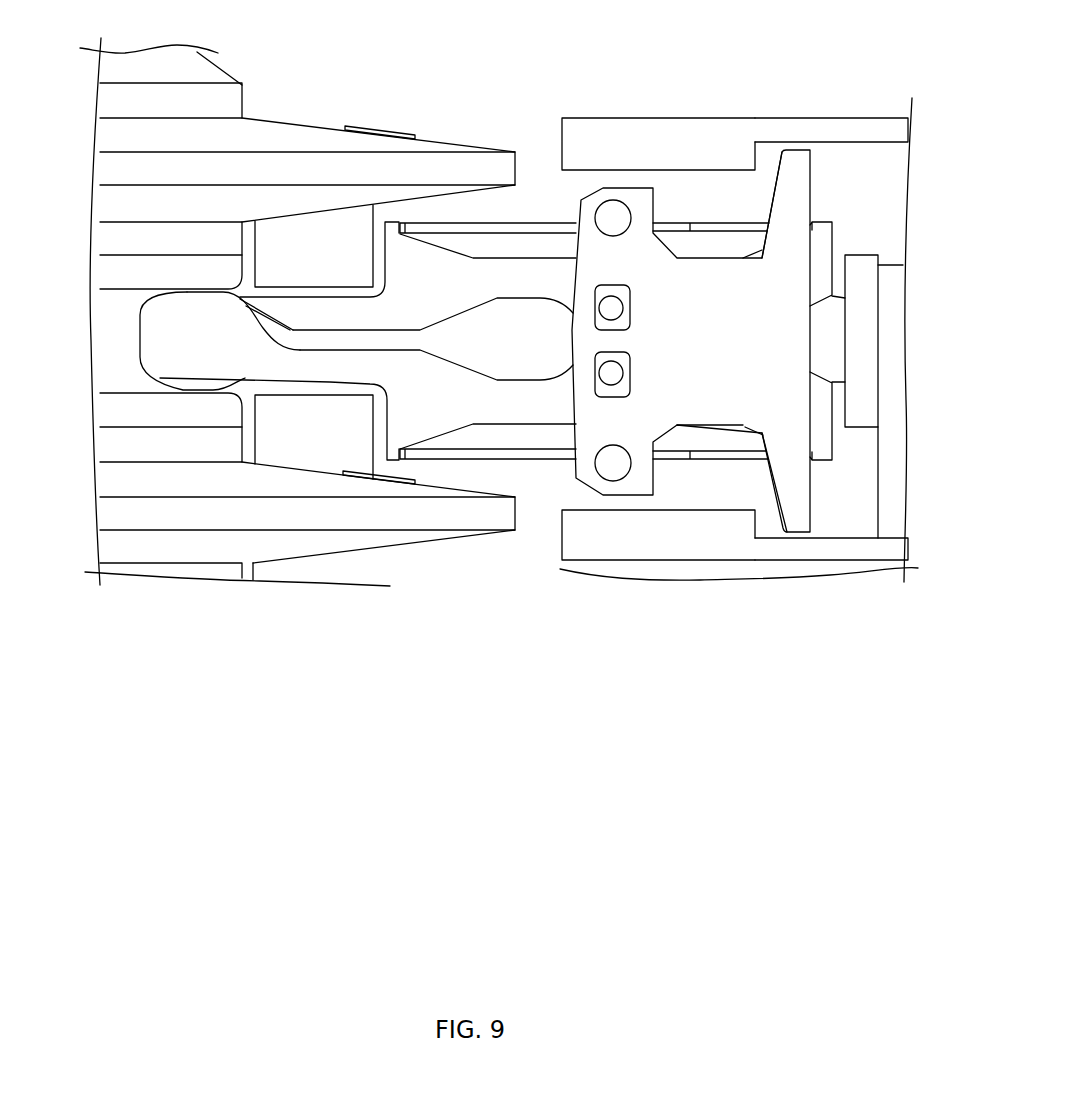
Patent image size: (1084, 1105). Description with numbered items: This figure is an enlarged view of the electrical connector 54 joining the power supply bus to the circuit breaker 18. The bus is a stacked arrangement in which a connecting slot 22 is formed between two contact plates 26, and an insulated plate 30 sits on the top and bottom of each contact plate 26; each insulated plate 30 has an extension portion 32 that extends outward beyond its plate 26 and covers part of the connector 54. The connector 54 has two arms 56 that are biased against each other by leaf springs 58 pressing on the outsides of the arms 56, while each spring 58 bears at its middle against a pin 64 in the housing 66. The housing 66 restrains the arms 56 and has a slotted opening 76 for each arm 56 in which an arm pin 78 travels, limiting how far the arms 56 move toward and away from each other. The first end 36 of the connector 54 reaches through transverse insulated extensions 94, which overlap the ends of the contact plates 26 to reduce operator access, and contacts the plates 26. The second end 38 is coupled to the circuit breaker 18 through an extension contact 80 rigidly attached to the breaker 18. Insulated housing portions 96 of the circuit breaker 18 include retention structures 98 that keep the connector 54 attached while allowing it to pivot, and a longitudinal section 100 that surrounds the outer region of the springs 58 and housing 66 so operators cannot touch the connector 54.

The circuit breaker 18 is at (905, 388).
The connecting slot 22 is at (100, 370).
The contact plates 26 is at (100, 268).
The insulated plate 30 is at (100, 170).
The extension portion 32 is at (401, 157).
The first end 36 is at (128, 347).
The second end 38 is at (856, 224).
The electrical connector 54 is at (537, 184).
The arms 56 is at (517, 265).
The leaf springs 58 is at (553, 224).
The pin 64 is at (632, 212).
The housing 66 is at (705, 414).
The slotted opening 76 is at (632, 298).
The arm pin 78 is at (624, 318).
The extension contact 80 is at (838, 330).
The transverse insulated extensions 94 is at (350, 216).
The insulated housing portions 96 is at (796, 117).
The retention structures 98 is at (757, 158).
The longitudinal section 100 is at (679, 117).